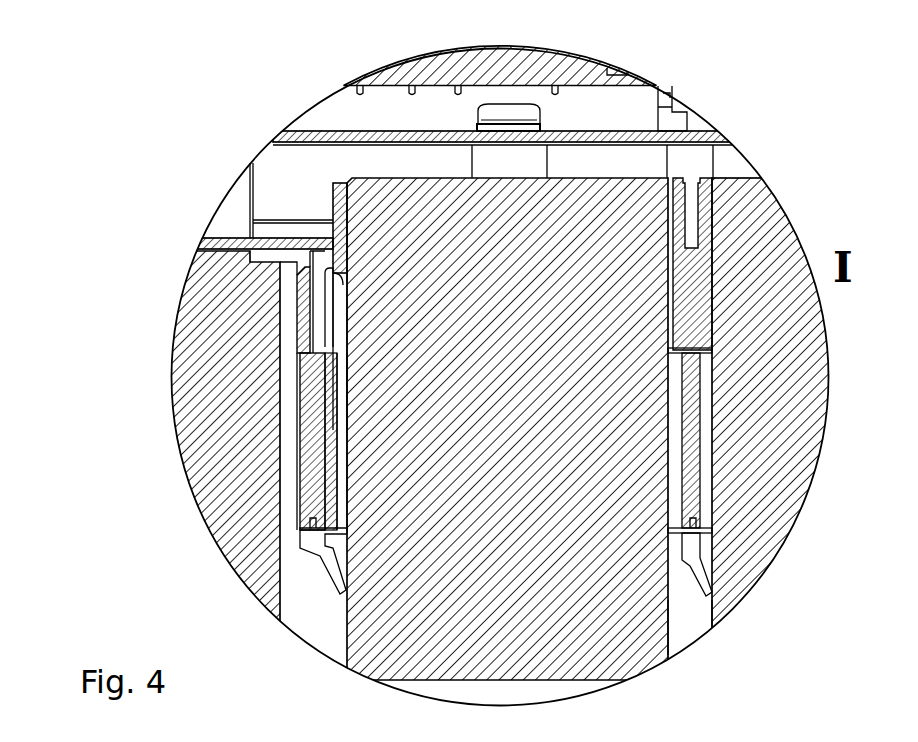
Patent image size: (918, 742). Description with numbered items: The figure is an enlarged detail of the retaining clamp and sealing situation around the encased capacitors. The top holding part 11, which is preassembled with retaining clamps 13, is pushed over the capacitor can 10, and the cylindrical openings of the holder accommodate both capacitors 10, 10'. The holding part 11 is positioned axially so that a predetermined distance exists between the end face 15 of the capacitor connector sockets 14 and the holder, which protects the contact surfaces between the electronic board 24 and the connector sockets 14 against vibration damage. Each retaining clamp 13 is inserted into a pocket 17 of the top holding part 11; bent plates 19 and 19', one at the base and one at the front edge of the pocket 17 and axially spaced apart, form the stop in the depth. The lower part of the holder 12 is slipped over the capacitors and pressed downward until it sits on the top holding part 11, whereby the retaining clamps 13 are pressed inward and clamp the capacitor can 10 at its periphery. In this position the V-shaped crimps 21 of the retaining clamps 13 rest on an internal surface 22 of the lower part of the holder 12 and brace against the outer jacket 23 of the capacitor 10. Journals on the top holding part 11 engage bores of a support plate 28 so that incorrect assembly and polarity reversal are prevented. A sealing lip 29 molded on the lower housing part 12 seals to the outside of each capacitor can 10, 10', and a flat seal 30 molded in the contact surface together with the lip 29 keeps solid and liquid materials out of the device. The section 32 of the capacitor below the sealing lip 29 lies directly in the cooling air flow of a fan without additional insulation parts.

The capacitor can 10 is at (438, 43).
The capacitor 10' is at (507, 429).
The top holding part 11 is at (336, 257).
The lower part of the holder 12 is at (293, 420).
The retaining clamp 13 is at (345, 473).
The capacitor connector socket 14 is at (522, 160).
The end face 15 is at (533, 145).
The pocket 17 is at (340, 317).
The bent plate 19 is at (187, 313).
The bent plate 19' is at (388, 307).
The V-shaped crimp 21 is at (325, 487).
The internal surface 22 is at (330, 503).
The outer jacket 23 is at (347, 385).
The electronic board 24 is at (417, 137).
The support plate 28 is at (242, 240).
The sealing lip 29 is at (327, 563).
The flat seal 30 is at (293, 247).
The section of the capacitor 32 is at (698, 658).